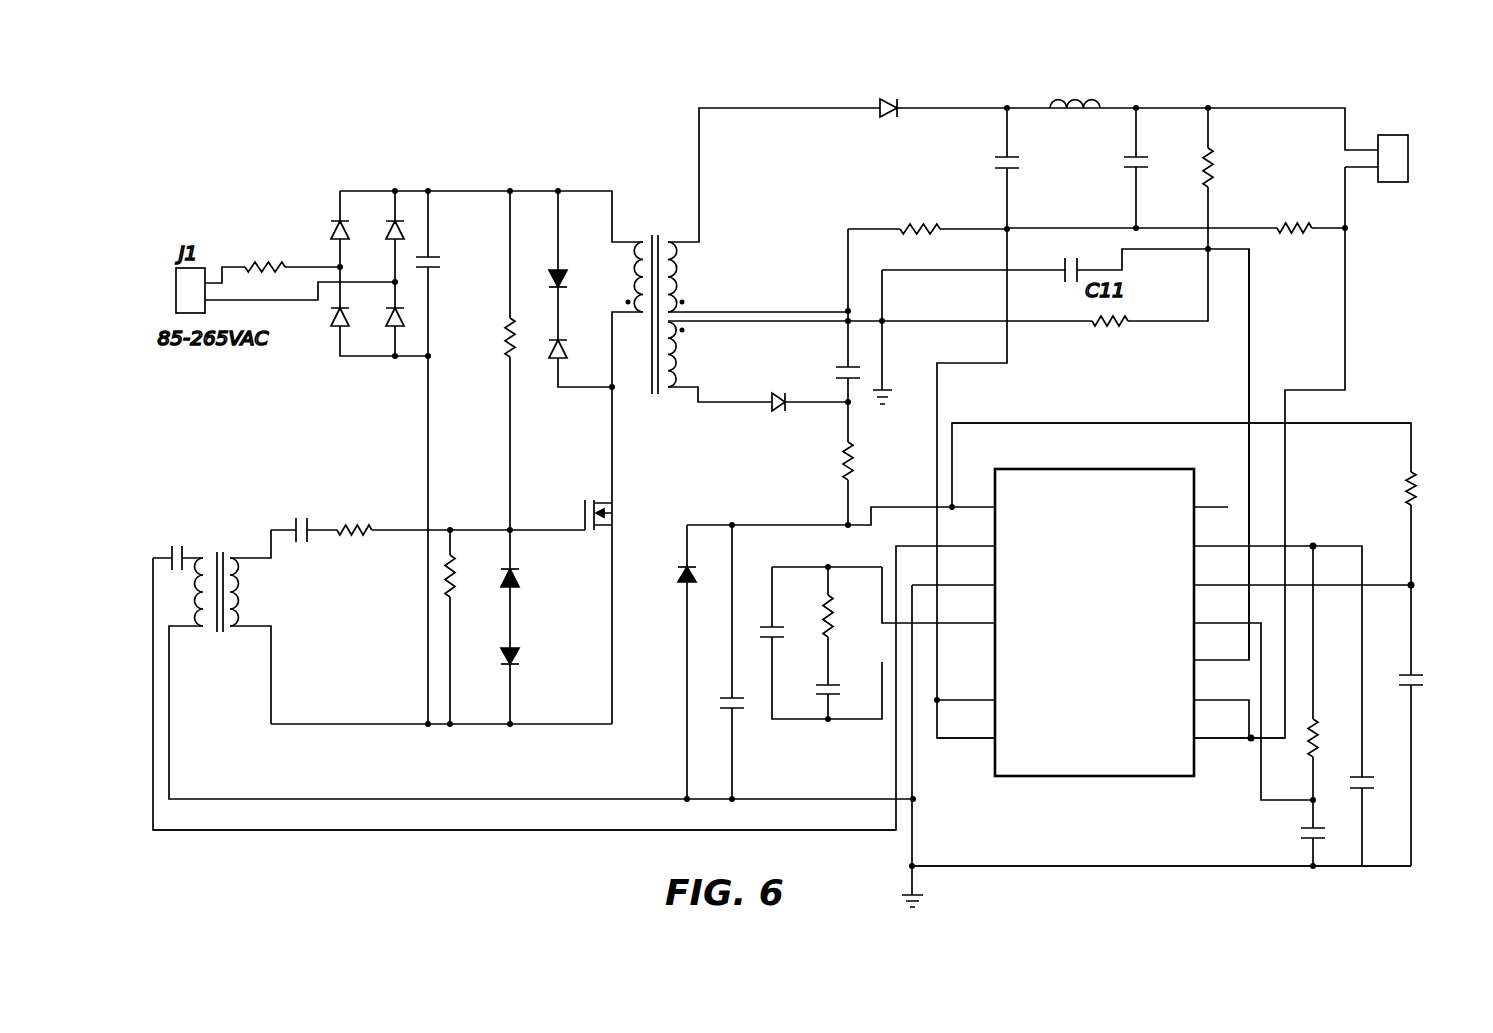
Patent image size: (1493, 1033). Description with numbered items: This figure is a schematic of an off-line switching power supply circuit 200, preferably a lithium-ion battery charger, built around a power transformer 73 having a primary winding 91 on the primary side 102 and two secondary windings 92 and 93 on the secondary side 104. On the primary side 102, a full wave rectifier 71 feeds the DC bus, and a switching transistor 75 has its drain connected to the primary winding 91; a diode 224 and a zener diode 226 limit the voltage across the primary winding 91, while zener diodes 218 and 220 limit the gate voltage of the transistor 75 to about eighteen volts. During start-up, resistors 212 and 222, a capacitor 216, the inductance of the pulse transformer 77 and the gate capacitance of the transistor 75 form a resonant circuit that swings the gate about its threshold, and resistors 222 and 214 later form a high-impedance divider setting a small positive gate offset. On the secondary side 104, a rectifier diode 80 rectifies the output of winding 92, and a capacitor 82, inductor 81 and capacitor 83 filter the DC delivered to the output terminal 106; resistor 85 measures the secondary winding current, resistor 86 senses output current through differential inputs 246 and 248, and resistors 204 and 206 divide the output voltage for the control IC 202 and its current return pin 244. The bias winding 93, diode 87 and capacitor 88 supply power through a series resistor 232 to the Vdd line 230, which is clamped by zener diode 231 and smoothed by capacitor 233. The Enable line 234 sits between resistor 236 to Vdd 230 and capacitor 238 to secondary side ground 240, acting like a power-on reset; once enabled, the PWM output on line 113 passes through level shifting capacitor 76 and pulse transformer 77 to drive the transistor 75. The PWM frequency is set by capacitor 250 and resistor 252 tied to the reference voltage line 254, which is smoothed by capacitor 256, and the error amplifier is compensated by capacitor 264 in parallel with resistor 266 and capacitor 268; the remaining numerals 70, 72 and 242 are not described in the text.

The resistor R1 70 is at (272, 260).
The full wave rectifier 71 is at (366, 190).
The capacitor C1 72 is at (432, 270).
The power transformer 73 is at (658, 294).
The switching transistor 75 is at (618, 512).
The level shifting capacitor 76 is at (185, 545).
The pulse transformer 77 is at (225, 552).
The rectifier diode 80 is at (899, 100).
The inductor 81 is at (1068, 98).
The capacitor 82 is at (1000, 172).
The capacitor 83 is at (1128, 170).
The resistor 85 is at (908, 222).
The current sense resistor 86 is at (1285, 222).
The diode 87 is at (780, 412).
The startup smoothing capacitor 88 is at (855, 382).
The primary winding 91 is at (636, 285).
The secondary winding 92 is at (677, 285).
The secondary winding 93 is at (677, 362).
The primary side 102 is at (470, 163).
The secondary side 104 is at (678, 100).
The output terminal 106 is at (1348, 105).
The output line 113 is at (433, 832).
The start-up circuit 200 is at (282, 841).
The control IC 202 is at (1112, 777).
The resistor 204 is at (1115, 326).
The resistor 206 is at (1214, 160).
The resistor 212 is at (355, 535).
The resistor 214 is at (452, 598).
The capacitor 216 is at (310, 520).
The zener diode 218 is at (518, 573).
The zener diode 220 is at (518, 662).
The resistor 222 is at (505, 358).
The diode 224 is at (563, 338).
The zener diode 226 is at (553, 270).
The Vdd line 230 is at (1048, 422).
The zener diode 231 is at (682, 585).
The series resistor 232 is at (855, 458).
The smoothing capacitor 233 is at (738, 712).
The Enable line 234 is at (1414, 582).
The resistor 236 is at (1414, 505).
The capacitor 238 is at (1418, 688).
The secondary side ground 240 is at (1160, 868).
The feedback line 242 is at (1251, 345).
The cell current return pin 244 is at (1249, 745).
The differential input 246 is at (1228, 740).
The differential input 248 is at (972, 740).
The capacitor 250 is at (1320, 842).
The resistor 252 is at (1316, 718).
The reference voltage line 254 is at (1300, 545).
The external capacitor 256 is at (1368, 770).
The capacitor 264 is at (778, 640).
The resistor 266 is at (833, 620).
The capacitor 268 is at (836, 698).